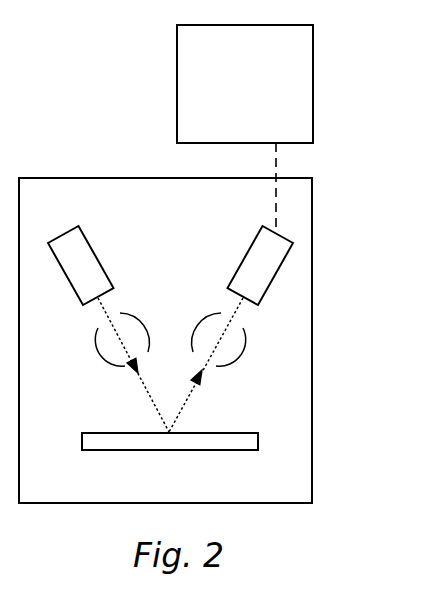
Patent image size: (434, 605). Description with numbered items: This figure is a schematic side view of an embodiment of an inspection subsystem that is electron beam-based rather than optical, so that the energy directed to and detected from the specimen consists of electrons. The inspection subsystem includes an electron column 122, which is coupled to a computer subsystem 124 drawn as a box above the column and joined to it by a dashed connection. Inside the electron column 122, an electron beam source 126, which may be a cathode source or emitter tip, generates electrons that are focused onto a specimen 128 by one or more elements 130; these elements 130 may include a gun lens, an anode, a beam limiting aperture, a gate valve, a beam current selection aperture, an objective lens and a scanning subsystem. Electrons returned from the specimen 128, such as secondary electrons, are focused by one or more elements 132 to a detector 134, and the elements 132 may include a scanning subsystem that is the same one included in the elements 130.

The electron column 122 is at (197, 340).
The computer subsystem 124 is at (245, 129).
The electron beam source 126 is at (108, 322).
The specimen 128 is at (186, 427).
The one or more elements 130 is at (97, 348).
The one or more elements 132 is at (247, 348).
The detector 134 is at (231, 322).